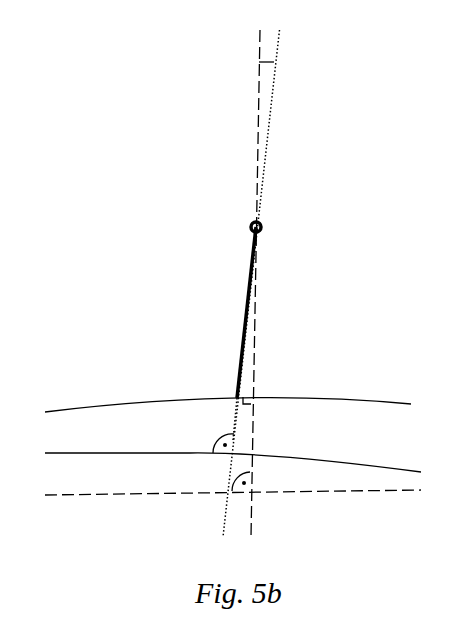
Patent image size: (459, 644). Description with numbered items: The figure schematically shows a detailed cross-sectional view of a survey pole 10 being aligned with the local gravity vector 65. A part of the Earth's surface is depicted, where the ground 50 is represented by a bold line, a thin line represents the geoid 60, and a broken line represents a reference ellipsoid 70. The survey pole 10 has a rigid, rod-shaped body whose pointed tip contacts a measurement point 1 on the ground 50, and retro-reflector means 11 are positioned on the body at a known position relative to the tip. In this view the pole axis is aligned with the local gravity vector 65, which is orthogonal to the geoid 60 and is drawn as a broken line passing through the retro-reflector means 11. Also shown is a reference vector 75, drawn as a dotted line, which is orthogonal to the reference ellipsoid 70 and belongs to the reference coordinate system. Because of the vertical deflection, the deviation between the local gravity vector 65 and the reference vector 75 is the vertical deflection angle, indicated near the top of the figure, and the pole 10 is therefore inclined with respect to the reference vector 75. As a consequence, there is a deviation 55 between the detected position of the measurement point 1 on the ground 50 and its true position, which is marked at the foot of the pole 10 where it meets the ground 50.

The measurement point 1 is at (172, 371).
The survey pole 10 is at (175, 312).
The retro-reflector means 11 is at (178, 213).
The ground 50 is at (228, 387).
The deviation 55 is at (298, 415).
The geoid 60 is at (233, 447).
The local gravity vector 65 is at (306, 283).
The reference ellipsoid 70 is at (233, 504).
The reference vector 75 is at (292, 283).